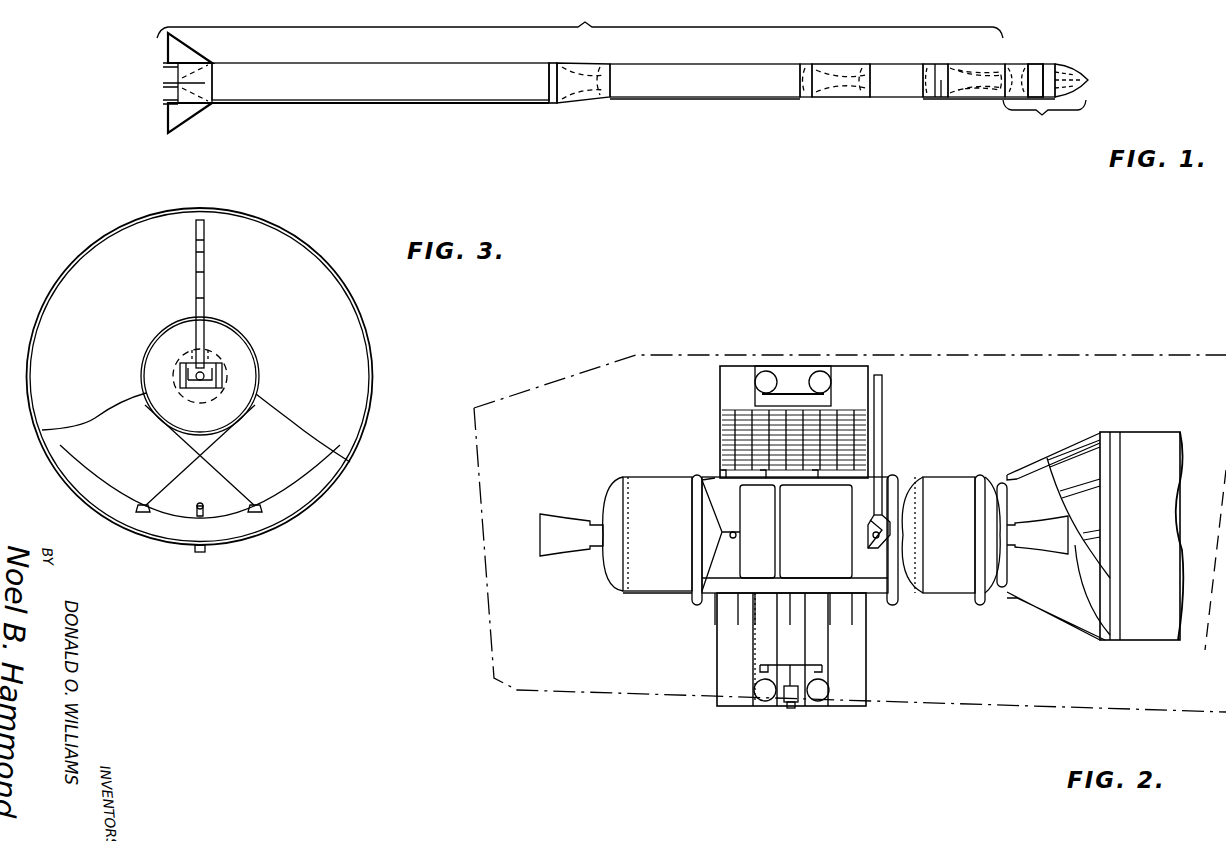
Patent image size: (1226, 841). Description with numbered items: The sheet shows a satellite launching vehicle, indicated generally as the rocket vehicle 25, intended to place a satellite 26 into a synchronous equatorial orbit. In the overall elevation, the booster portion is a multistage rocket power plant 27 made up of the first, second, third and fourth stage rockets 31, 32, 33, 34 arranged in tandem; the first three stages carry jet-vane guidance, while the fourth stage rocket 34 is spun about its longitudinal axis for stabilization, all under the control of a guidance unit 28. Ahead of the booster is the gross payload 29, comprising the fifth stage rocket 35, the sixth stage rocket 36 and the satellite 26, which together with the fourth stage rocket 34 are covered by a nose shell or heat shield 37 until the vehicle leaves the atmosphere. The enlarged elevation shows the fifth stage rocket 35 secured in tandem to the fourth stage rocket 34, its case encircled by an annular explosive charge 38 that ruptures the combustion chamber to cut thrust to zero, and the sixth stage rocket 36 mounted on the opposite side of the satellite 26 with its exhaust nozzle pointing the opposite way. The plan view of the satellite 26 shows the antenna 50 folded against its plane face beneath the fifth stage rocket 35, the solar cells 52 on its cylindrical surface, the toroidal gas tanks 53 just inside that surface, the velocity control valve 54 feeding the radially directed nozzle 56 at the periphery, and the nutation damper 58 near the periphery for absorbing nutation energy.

In FIG. 1, the rocket vehicle 25 is at (571, 108).
In FIG. 1, the satellite 26 is at (1036, 70).
In FIG. 3, the satellite 26 is at (378, 326).
In FIG. 2, the satellite 26 is at (720, 407).
In FIG. 1, the multistage rocket power plant 27 is at (580, 23).
In FIG. 1, the guidance unit 28 is at (936, 98).
In FIG. 1, the gross payload 29 is at (1044, 123).
In FIG. 2, the gross payload 29 is at (932, 434).
In FIG. 1, the first stage rocket 31 is at (362, 82).
In FIG. 1, the second stage rocket 32 is at (720, 82).
In FIG. 1, the third stage rocket 33 is at (893, 86).
In FIG. 1, the fourth stage rocket 34 is at (978, 88).
In FIG. 2, the fourth stage rocket 34 is at (1140, 442).
In FIG. 1, the fifth stage rocket 35 is at (1026, 52).
In FIG. 2, the fifth stage rocket 35 is at (940, 495).
In FIG. 1, the sixth stage rocket 36 is at (1075, 72).
In FIG. 2, the sixth stage rocket 36 is at (650, 492).
In FIG. 2, the heat shield 37 is at (1120, 354).
In FIG. 2, the annular explosive charge 38 is at (1003, 600).
In FIG. 3, the antenna 50 is at (205, 264).
In FIG. 2, the antenna 50 is at (885, 406).
In FIG. 3, the solar cells 52 is at (300, 504).
In FIG. 2, the solar cells 52 is at (750, 452).
In FIG. 3, the tanks 53 is at (74, 467).
In FIG. 2, the tanks 53 is at (820, 646).
In FIG. 2, the velocity control valve 54 is at (786, 702).
In FIG. 3, the nozzle 56 is at (200, 553).
In FIG. 2, the nozzle 56 is at (793, 708).
In FIG. 2, the nutation damper 58 is at (786, 392).